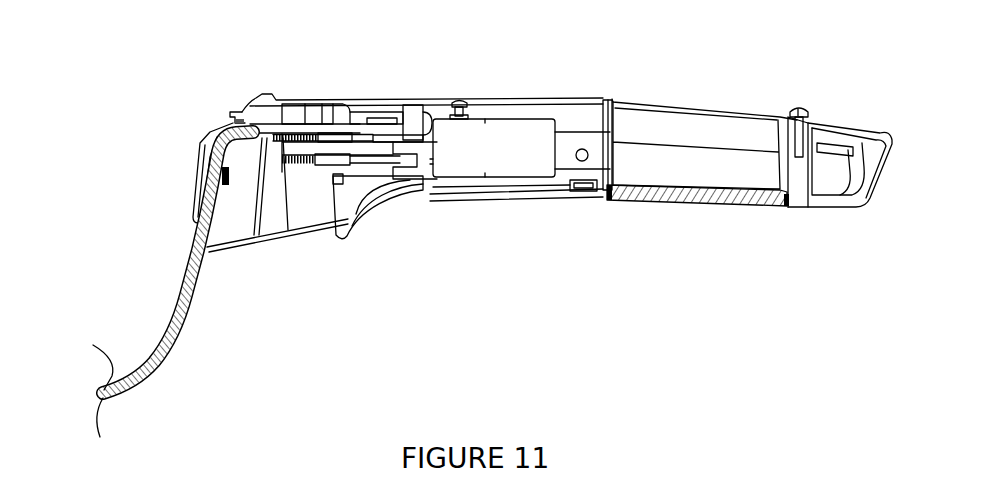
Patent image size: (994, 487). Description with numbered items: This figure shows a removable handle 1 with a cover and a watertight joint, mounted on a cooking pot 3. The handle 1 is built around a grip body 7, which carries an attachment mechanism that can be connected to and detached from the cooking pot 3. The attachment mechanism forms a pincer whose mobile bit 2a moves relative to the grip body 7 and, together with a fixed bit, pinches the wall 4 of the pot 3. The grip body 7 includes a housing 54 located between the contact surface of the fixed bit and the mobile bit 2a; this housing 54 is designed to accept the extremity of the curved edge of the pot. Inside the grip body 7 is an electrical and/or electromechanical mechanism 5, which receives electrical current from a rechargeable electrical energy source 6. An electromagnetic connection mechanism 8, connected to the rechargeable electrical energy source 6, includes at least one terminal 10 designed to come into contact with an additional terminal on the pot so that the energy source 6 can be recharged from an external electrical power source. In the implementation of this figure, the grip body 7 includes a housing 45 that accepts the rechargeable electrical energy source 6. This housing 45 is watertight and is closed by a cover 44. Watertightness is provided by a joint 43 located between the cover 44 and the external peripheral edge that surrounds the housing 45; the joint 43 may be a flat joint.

The removable handle 1 is at (491, 249).
The mobile bit 2a is at (208, 163).
The cooking pot 3 is at (158, 294).
The wall 4 is at (164, 365).
The electrical and/or electromechanical mechanism 5 is at (427, 93).
The rechargeable electrical energy source 6 is at (753, 112).
The grip body 7 is at (806, 208).
The electromagnetic connection mechanism 8 is at (236, 186).
The terminal 10 is at (220, 170).
The joint 43 is at (605, 190).
The cover 44 is at (690, 200).
The housing 45 is at (623, 103).
The housing 54 is at (250, 128).